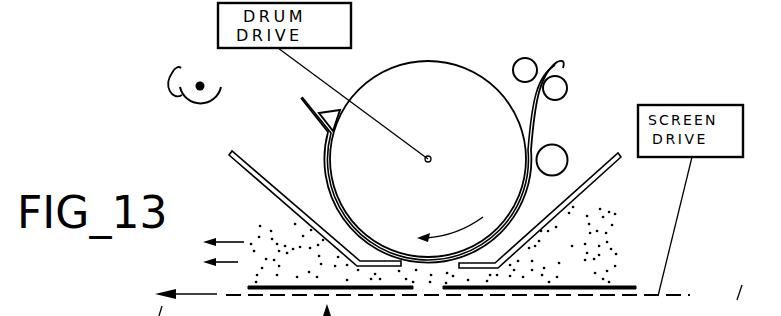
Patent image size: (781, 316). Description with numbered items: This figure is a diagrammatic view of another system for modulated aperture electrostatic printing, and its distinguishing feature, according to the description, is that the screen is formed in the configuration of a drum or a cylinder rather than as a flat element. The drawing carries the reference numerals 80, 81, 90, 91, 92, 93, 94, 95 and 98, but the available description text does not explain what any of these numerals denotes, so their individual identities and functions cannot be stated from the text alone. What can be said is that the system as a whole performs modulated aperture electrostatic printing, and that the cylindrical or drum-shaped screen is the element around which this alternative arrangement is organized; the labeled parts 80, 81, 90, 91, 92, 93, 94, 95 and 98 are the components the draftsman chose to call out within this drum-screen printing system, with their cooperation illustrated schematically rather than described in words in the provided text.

The developing apparatus 80 is at (462, 0).
The pivot 81 is at (194, 74).
The support plates 90 is at (302, 285).
The deflector plates 91 is at (265, 187).
The screen 92 is at (448, 300).
The belt 93 is at (326, 162).
The drum 94 is at (411, 63).
The rollers 95 is at (532, 58).
The powder 98 is at (600, 238).